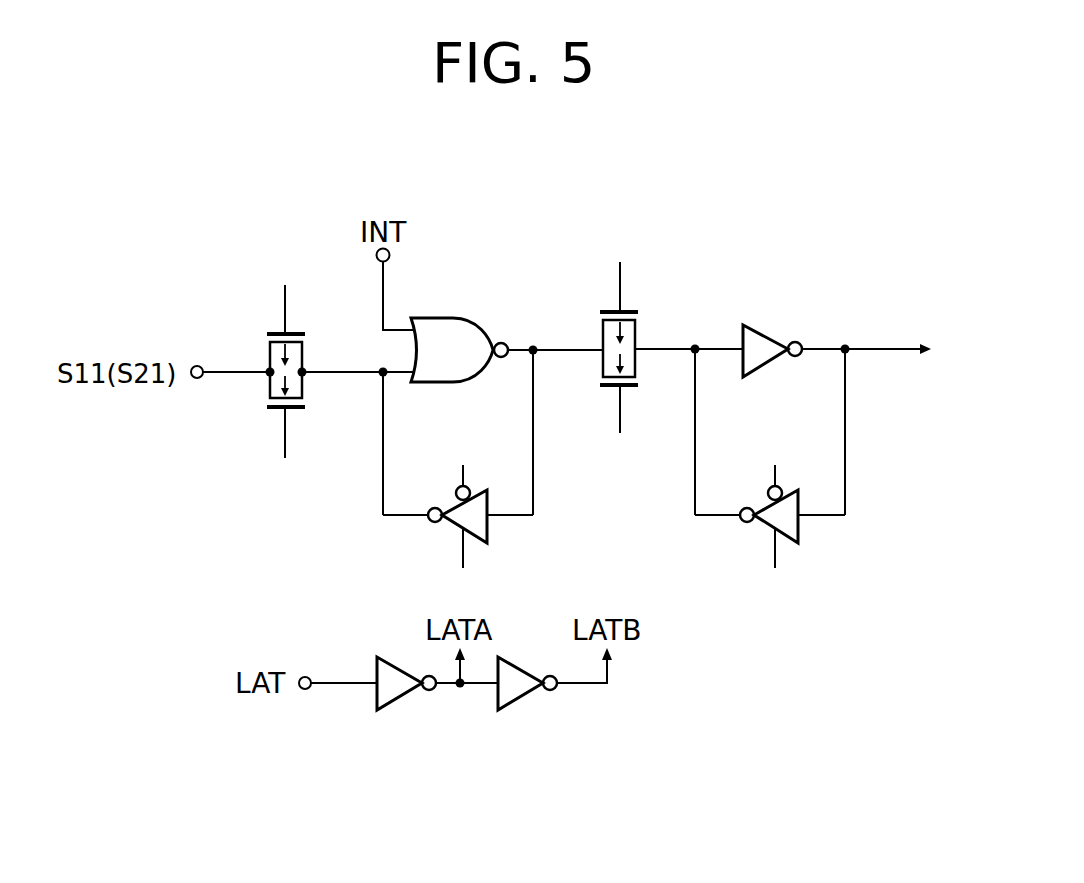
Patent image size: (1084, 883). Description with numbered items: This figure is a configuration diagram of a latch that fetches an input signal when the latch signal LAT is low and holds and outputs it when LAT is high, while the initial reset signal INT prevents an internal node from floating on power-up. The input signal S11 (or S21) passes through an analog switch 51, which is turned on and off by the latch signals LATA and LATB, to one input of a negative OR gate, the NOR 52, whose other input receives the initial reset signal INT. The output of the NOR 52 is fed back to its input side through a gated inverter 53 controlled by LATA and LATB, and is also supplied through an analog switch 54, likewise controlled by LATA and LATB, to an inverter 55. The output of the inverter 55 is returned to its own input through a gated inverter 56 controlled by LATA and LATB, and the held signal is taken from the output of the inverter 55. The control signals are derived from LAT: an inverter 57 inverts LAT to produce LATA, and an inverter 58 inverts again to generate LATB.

The analog switch 51 is at (268, 355).
The negative OR gate (NOR) 52 is at (441, 318).
The gated inverter 53 is at (490, 528).
The analog switch 54 is at (637, 335).
The inverter 55 is at (762, 330).
The gated inverter 56 is at (800, 528).
The inverter 57 is at (403, 695).
The inverter 58 is at (522, 695).